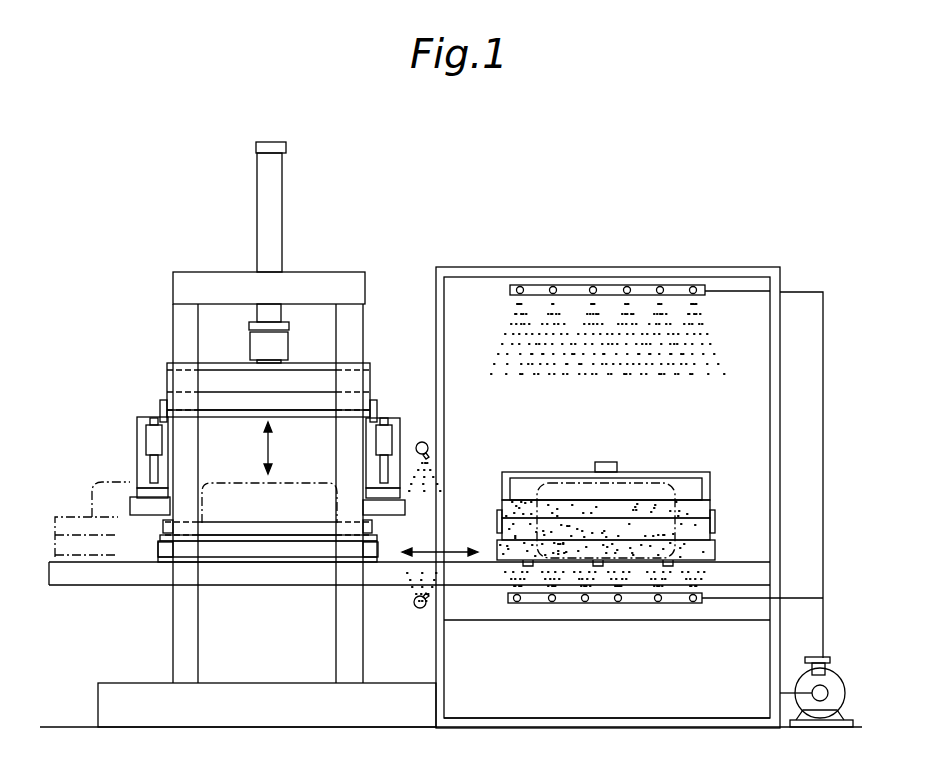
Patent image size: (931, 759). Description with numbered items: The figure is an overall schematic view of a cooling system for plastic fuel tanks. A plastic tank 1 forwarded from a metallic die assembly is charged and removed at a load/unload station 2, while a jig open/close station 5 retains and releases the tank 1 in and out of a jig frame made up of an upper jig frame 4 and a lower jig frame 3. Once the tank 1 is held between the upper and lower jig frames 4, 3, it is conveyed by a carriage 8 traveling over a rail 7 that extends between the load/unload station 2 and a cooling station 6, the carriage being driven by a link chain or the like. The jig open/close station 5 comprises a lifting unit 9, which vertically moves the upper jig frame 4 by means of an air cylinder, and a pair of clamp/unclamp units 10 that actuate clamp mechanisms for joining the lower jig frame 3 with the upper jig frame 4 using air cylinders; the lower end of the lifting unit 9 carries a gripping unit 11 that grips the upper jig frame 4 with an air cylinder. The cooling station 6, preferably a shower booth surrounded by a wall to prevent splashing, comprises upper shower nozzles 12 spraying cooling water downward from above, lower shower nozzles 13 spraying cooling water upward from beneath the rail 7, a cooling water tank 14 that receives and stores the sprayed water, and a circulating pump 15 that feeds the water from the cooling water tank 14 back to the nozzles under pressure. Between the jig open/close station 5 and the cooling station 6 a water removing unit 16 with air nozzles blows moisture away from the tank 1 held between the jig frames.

The plastic tank 1 is at (292, 480).
The load/unload station 2 is at (86, 514).
The lower jig frame 3 is at (230, 525).
The upper jig frame 4 is at (210, 408).
The jig open/close station 5 is at (298, 418).
The cooling station 6 is at (718, 320).
The rail 7 is at (370, 585).
The carriage 8 is at (237, 555).
The lifting unit 9 is at (282, 227).
The clamp/unclamp units 10 is at (150, 443).
The gripping unit 11 is at (290, 350).
The upper shower nozzles 12 is at (577, 290).
The lower shower nozzles 13 is at (600, 603).
The cooling water tank 14 is at (622, 710).
The circulating pump 15 is at (837, 675).
The water removing unit 16 is at (428, 444).